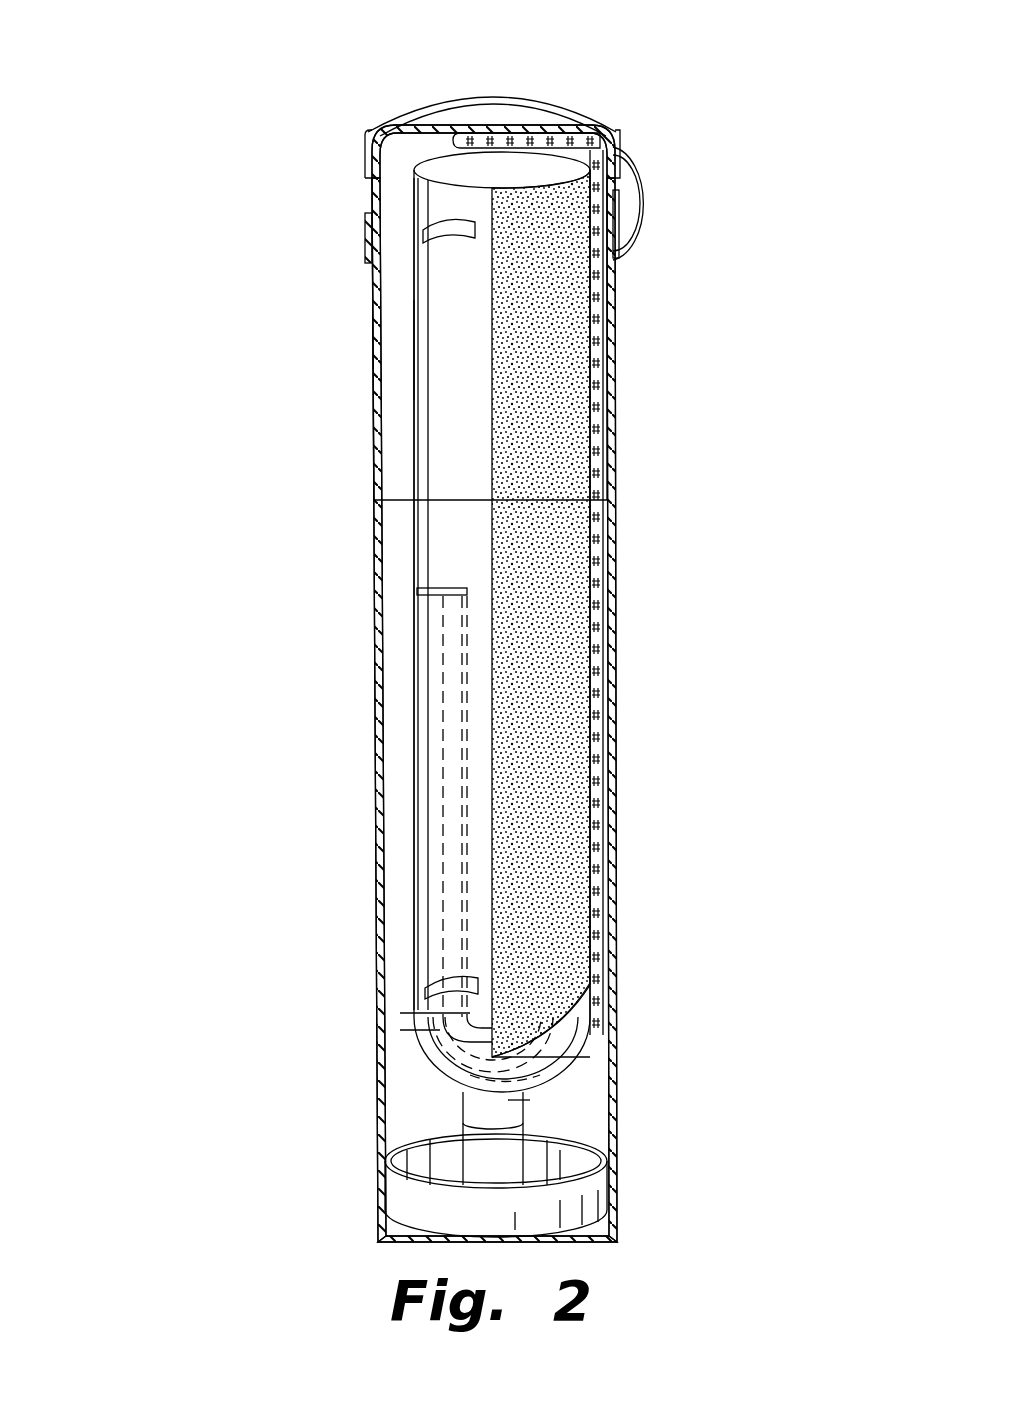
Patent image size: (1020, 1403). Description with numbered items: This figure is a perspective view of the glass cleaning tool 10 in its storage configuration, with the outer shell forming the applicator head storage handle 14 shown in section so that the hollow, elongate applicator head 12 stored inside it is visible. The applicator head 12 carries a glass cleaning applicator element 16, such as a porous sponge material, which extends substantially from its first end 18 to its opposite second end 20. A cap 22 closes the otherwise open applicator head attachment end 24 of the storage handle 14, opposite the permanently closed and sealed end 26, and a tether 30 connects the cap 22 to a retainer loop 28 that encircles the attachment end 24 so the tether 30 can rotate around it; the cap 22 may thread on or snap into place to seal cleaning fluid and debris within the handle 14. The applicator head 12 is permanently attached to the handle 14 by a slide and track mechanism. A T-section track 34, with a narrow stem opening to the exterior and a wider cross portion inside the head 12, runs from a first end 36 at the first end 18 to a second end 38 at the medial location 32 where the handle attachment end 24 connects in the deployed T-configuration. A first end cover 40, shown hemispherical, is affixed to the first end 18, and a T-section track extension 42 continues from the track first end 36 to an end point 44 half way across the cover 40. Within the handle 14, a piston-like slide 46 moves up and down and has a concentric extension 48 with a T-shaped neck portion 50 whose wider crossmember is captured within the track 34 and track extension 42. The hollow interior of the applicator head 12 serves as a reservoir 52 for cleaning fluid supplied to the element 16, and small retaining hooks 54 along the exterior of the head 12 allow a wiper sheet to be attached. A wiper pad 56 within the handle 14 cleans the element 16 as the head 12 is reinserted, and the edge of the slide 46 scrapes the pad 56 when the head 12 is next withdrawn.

The glass cleaning tool 10 is at (150, 913).
The applicator head 12 is at (476, 482).
The applicator head storage handle 14 is at (376, 383).
The glass cleaning applicator element 16 is at (612, 575).
The first end 18 is at (548, 1010).
The second end 20 is at (478, 188).
The cap 22 is at (500, 113).
The applicator head attachment end 24 is at (368, 198).
The closed end 26 is at (577, 1205).
The retainer loop 28 is at (365, 238).
The tether 30 is at (648, 208).
The medial location 32 is at (418, 567).
The T-section track 34 is at (443, 850).
The first end of track 36 is at (428, 1017).
The second end of track 38 is at (430, 593).
The first end cover 40 is at (553, 1052).
The T-section track extension 42 is at (447, 1065).
The end point 44 is at (528, 1070).
The slide 46 is at (455, 1190).
The concentric extension 48 is at (485, 1140).
The T-shaped neck portion 50 is at (528, 1100).
The reservoir 52 is at (457, 352).
The retaining hooks 54 is at (452, 245).
The wiper pad 56 is at (610, 372).